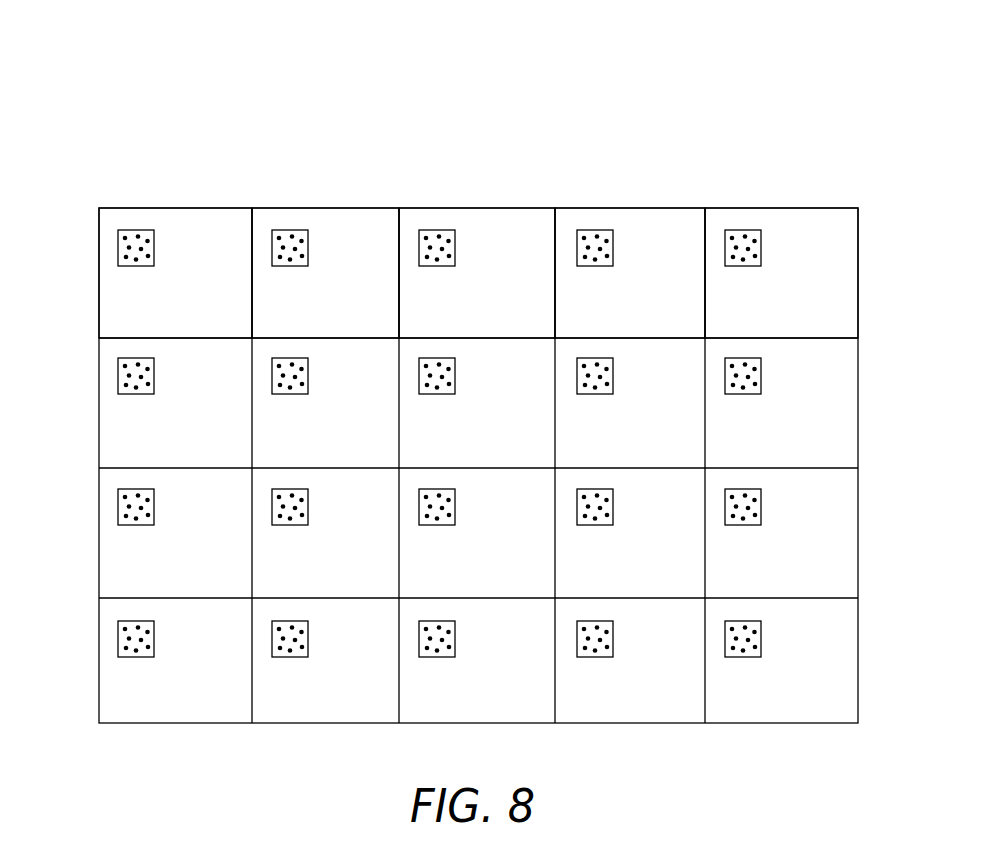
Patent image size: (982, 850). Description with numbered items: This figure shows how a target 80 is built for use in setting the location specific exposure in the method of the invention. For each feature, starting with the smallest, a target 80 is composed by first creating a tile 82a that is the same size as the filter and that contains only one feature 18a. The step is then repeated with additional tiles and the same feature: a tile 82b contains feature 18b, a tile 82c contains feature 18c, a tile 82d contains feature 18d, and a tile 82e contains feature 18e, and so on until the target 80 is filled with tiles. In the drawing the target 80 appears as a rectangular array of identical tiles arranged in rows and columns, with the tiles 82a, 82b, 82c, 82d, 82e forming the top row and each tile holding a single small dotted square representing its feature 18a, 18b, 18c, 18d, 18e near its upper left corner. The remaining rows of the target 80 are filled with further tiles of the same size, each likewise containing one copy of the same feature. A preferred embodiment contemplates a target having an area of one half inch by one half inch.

The target 80 is at (637, 112).
The feature 18a is at (140, 233).
The feature 18b is at (281, 231).
The feature 18c is at (441, 231).
The feature 18d is at (597, 231).
The feature 18e is at (752, 231).
The tile 82a is at (208, 248).
The tile 82b is at (355, 276).
The tile 82c is at (503, 273).
The tile 82d is at (650, 253).
The tile 82e is at (792, 262).